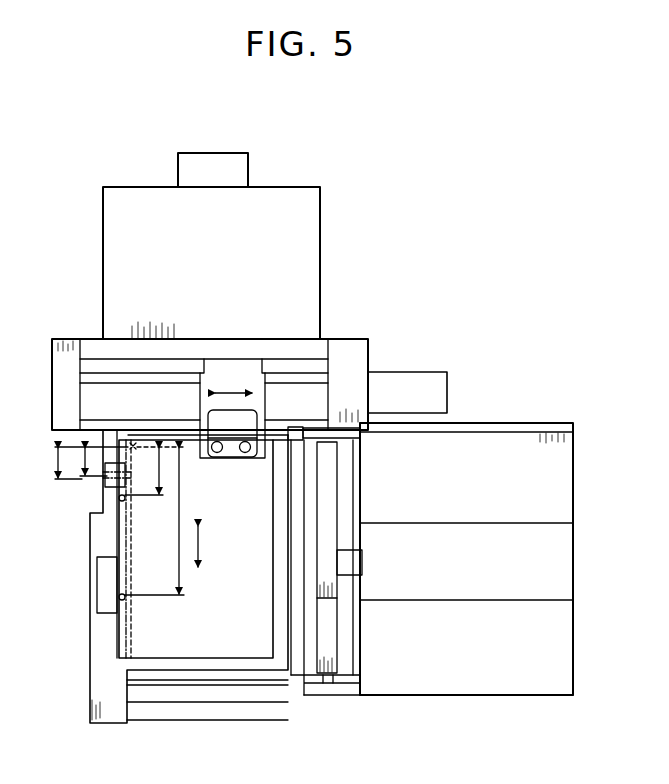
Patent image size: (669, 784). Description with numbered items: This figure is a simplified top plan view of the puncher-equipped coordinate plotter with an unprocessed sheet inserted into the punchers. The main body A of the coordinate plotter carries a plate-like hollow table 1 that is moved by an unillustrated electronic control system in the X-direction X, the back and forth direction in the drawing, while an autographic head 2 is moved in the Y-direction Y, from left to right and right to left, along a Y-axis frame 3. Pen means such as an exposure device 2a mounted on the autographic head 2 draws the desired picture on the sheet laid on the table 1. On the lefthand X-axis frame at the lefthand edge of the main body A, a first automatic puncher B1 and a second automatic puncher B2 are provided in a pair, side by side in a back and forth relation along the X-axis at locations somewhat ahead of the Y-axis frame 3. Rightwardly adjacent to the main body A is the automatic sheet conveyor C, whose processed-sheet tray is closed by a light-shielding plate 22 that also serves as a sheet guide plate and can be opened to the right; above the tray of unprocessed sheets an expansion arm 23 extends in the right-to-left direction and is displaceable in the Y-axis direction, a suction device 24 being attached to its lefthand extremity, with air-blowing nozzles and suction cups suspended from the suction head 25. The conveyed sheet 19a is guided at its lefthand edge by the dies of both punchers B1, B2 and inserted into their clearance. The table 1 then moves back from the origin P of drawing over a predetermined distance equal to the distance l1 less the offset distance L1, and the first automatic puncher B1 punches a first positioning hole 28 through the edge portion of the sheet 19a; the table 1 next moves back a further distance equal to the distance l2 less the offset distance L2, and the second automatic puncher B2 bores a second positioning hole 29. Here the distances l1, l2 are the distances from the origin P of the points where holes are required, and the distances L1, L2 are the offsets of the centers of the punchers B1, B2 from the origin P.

The main body A is at (325, 224).
The Y-axis frame 3 is at (118, 339).
The Y-direction Y is at (233, 391).
The autographic head 2 is at (201, 447).
The exposure device 2a is at (245, 453).
The origin of drawing P is at (133, 442).
The offset distance L2 is at (78, 463).
The offset distance L1 is at (85, 462).
The first automatic puncher B1 is at (105, 470).
The second automatic puncher B2 is at (108, 487).
The conveyed sheet 19a is at (172, 648).
The first positioning hole 28 is at (125, 500).
The second positioning hole 29 is at (125, 598).
The distance l1 is at (146, 471).
The distance l2 is at (154, 521).
The X-direction X is at (203, 543).
The table 1 is at (228, 672).
The suction device 24 is at (338, 530).
The expansion arm 23 is at (362, 564).
The light-shielding plate 22 is at (352, 665).
The suction head 25 is at (333, 685).
The automatic sheet conveyor C is at (514, 421).